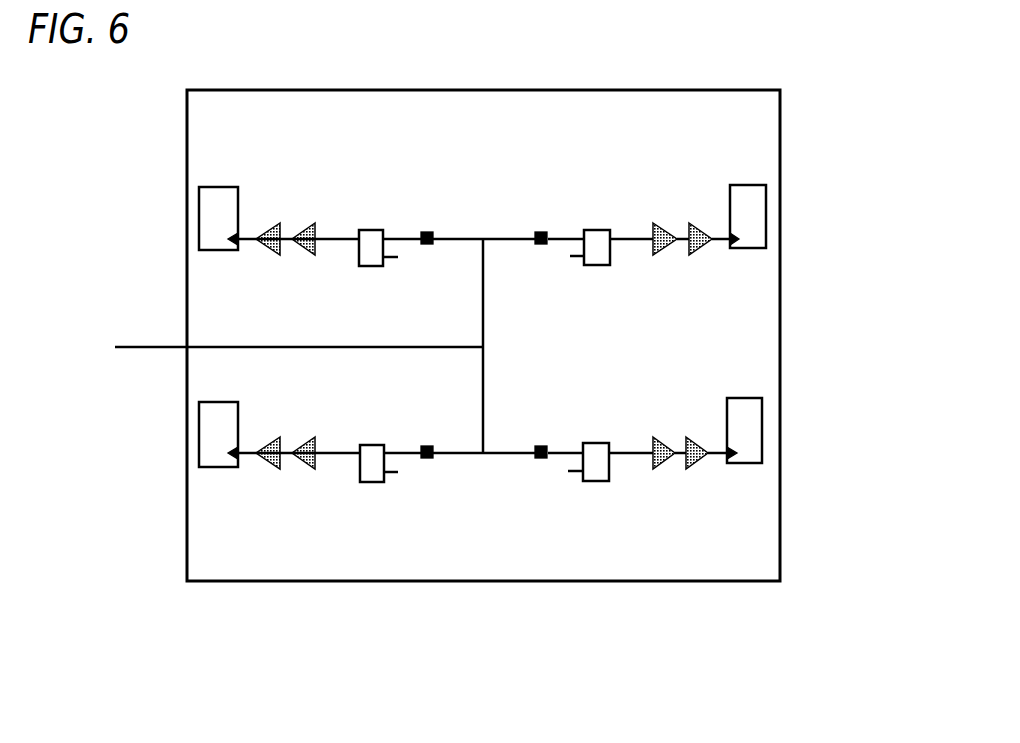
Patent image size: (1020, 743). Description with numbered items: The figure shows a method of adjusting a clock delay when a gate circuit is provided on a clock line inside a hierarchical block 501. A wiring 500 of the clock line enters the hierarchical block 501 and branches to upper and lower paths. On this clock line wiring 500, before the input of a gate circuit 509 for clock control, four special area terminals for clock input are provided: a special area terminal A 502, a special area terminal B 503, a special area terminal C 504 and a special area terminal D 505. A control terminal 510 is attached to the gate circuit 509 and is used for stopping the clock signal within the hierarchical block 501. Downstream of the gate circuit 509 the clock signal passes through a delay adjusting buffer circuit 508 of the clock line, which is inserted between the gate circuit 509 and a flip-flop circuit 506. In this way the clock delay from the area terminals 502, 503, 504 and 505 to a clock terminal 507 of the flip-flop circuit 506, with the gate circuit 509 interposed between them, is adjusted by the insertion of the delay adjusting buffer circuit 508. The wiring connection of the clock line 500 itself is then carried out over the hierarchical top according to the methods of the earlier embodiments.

The wiring of clock line 500 is at (178, 346).
The hierarchical block 501 is at (298, 89).
The special area terminal A for clock input 502 is at (428, 232).
The special area terminal B for clock input 503 is at (541, 232).
The special area terminal C for clock input 504 is at (428, 460).
The special area terminal D for clock input 505 is at (541, 460).
The flip-flop circuit 506 is at (742, 185).
The clock terminal 507 is at (737, 237).
The delay adjusting buffer circuit 508 is at (712, 248).
The gate circuit for clock control 509 is at (592, 266).
The control terminal 510 is at (577, 258).